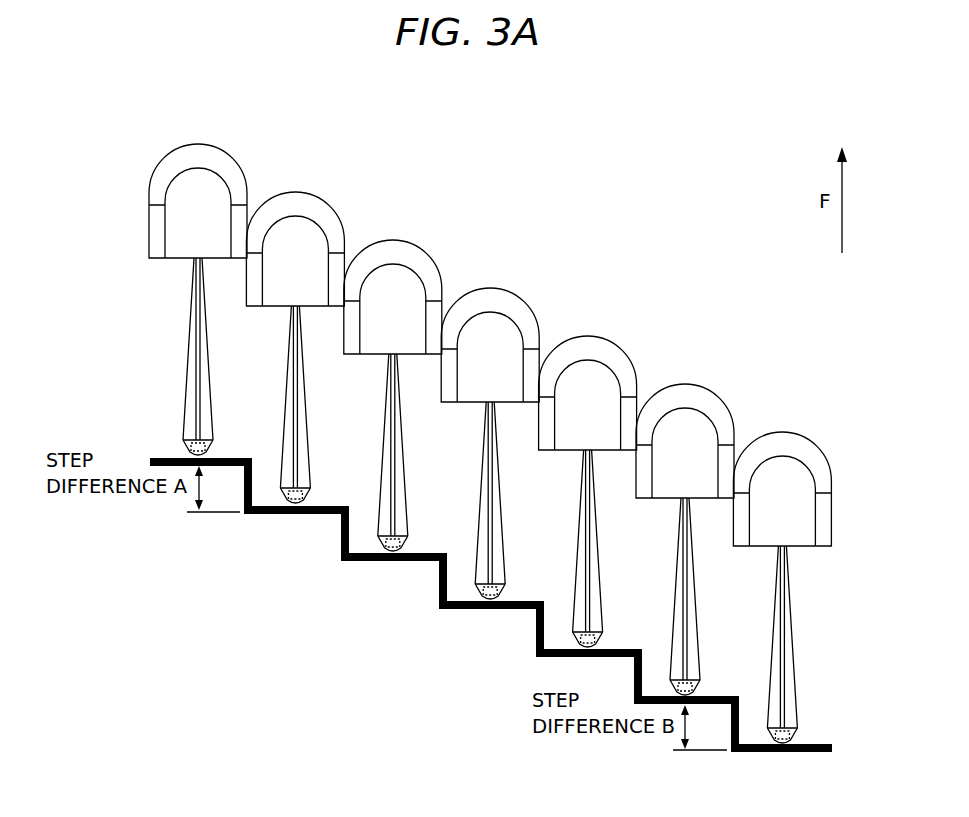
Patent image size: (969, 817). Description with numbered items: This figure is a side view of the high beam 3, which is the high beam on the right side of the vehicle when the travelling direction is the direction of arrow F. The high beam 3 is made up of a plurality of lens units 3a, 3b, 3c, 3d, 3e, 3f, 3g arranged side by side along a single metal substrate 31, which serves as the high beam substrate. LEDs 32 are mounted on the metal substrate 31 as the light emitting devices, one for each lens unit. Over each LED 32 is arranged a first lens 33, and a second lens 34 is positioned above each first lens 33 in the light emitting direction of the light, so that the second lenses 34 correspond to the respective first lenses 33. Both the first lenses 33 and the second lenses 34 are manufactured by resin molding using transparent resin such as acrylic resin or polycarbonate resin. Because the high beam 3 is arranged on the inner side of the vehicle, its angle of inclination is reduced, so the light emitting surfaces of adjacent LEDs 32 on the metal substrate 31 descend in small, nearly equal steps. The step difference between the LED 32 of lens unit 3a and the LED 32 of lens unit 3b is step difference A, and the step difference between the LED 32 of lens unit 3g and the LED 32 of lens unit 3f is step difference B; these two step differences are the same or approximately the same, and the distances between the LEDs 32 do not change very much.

The high beam 3 is at (576, 202).
The lens unit 3a is at (198, 144).
The lens unit 3b is at (295, 311).
The lens unit 3c is at (393, 359).
The lens unit 3d is at (490, 407).
The lens unit 3e is at (588, 455).
The lens unit 3f is at (685, 503).
The lens unit 3g is at (806, 551).
The metal substrate 31 is at (832, 748).
The LED 32 is at (188, 456).
The first lens 33 is at (814, 644).
The second lens 34 is at (806, 480).